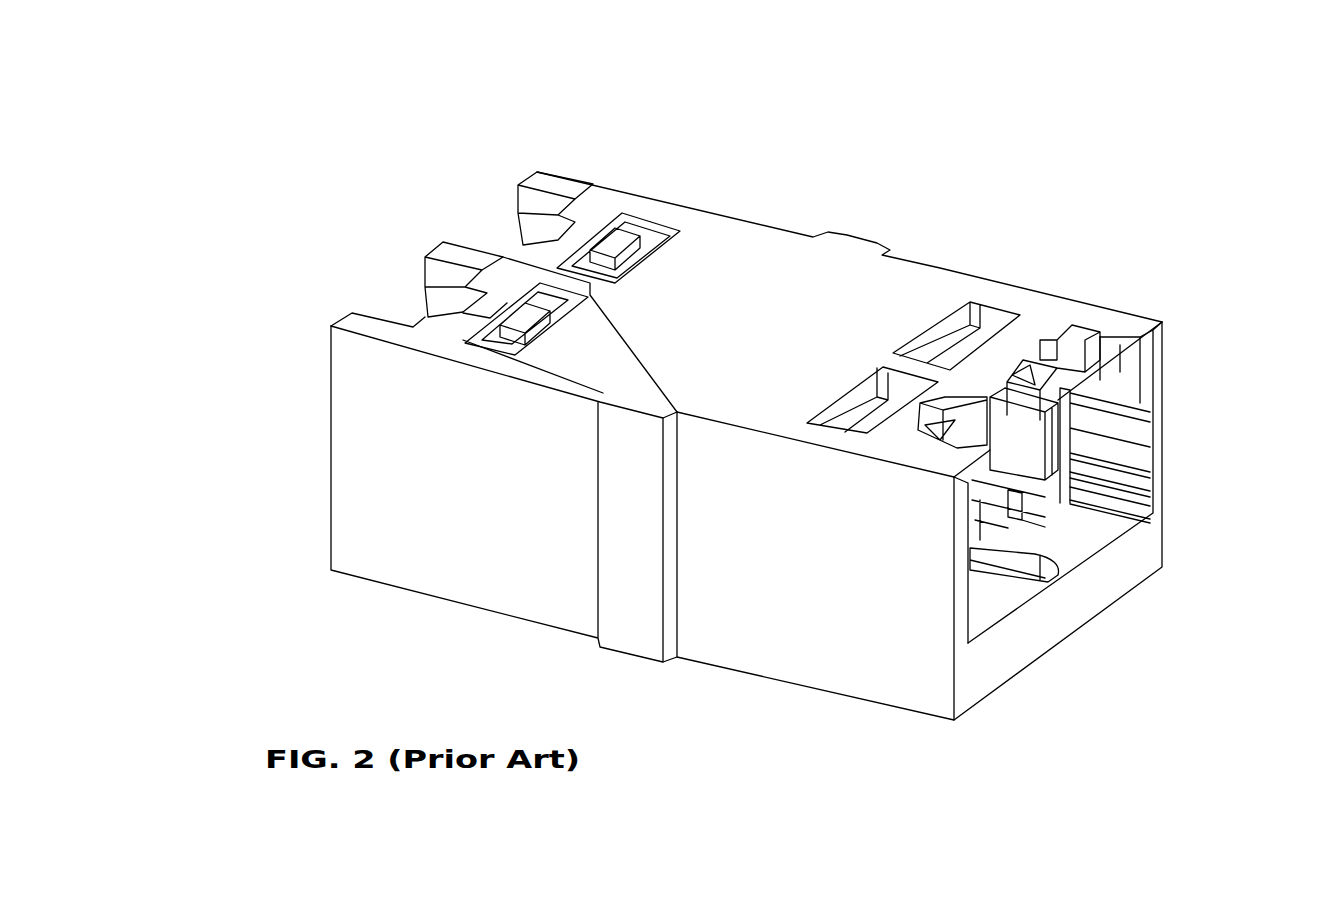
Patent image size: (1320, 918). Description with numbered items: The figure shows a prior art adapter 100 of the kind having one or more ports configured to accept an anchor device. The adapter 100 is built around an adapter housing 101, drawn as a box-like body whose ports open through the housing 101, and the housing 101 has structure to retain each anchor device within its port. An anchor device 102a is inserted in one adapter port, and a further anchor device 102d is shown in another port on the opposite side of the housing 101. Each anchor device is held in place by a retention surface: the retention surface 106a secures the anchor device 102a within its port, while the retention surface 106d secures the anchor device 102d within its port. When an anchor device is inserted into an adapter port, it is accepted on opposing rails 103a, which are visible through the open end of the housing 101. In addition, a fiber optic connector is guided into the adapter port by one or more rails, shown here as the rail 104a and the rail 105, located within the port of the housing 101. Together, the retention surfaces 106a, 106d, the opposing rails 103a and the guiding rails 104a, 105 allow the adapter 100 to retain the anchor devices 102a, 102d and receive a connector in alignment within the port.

The adapter 100 is at (310, 79).
The adapter housing 101 is at (740, 278).
The anchor device 102a is at (1075, 376).
The anchor device 102d is at (522, 343).
The opposing rails 103a is at (1123, 412).
The rail 104a is at (1123, 500).
The rail 105 is at (1047, 586).
The retention surface 106a is at (1046, 362).
The retention surface 106d is at (607, 253).